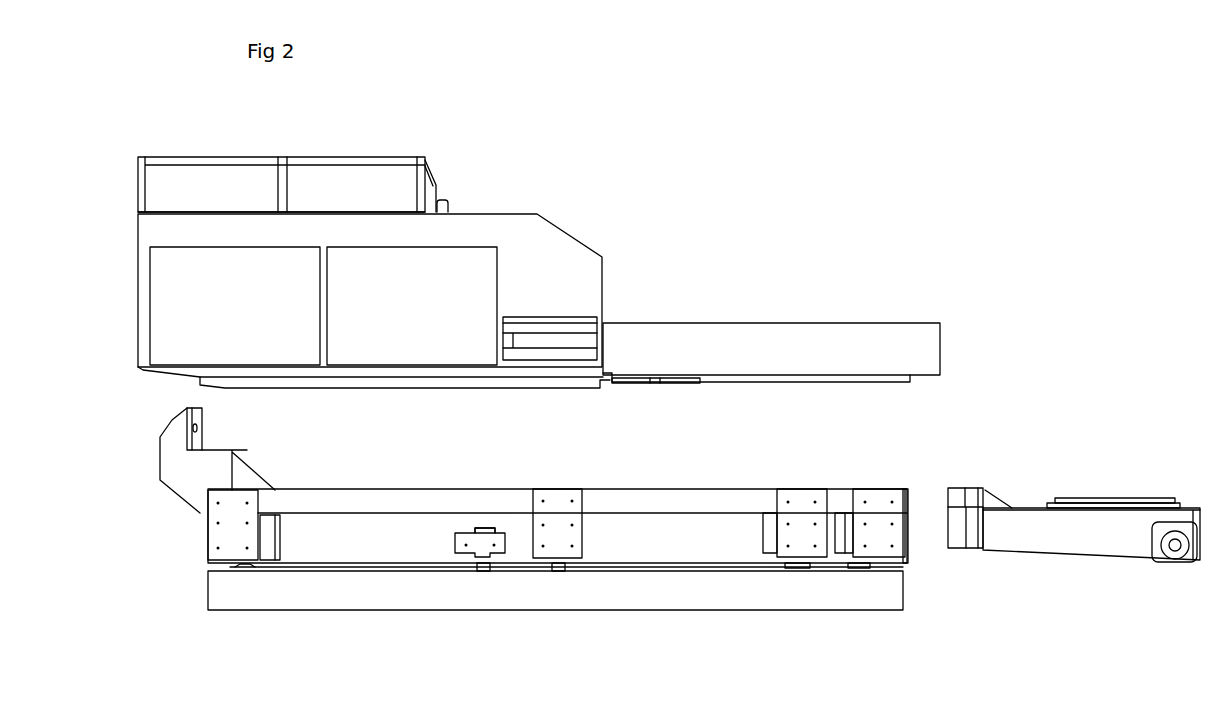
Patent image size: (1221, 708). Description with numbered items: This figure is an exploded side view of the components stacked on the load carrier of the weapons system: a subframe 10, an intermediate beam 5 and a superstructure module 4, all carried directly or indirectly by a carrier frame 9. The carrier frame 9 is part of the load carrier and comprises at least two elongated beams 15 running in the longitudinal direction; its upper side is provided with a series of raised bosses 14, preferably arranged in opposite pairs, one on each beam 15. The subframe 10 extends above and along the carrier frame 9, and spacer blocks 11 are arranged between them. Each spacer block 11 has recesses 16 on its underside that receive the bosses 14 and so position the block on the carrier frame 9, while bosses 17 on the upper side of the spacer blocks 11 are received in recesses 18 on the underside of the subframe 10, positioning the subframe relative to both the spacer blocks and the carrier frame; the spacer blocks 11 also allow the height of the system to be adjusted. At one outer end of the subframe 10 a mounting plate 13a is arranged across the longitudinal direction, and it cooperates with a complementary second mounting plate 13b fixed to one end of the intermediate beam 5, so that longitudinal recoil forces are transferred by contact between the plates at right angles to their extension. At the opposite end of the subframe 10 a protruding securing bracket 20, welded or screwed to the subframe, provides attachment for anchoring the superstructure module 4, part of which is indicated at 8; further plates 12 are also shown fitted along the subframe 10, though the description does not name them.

The superstructure module 4 is at (757, 218).
The intermediate beam 5 is at (1088, 525).
The cab / superstructure 8 is at (418, 258).
The carrier frame 9 is at (322, 631).
The subframe 10 is at (678, 494).
The spacer blocks 11 is at (462, 538).
The mounting plates 12 is at (555, 505).
The mounting plate 13a is at (906, 490).
The second mounting plate 13b is at (972, 525).
The raised bosses 14 is at (557, 573).
The elongated beams 15 is at (668, 597).
The recesses 16 is at (484, 573).
The bosses 17 is at (486, 530).
The recesses 18 is at (471, 513).
The protruding securing bracket 20 is at (205, 423).